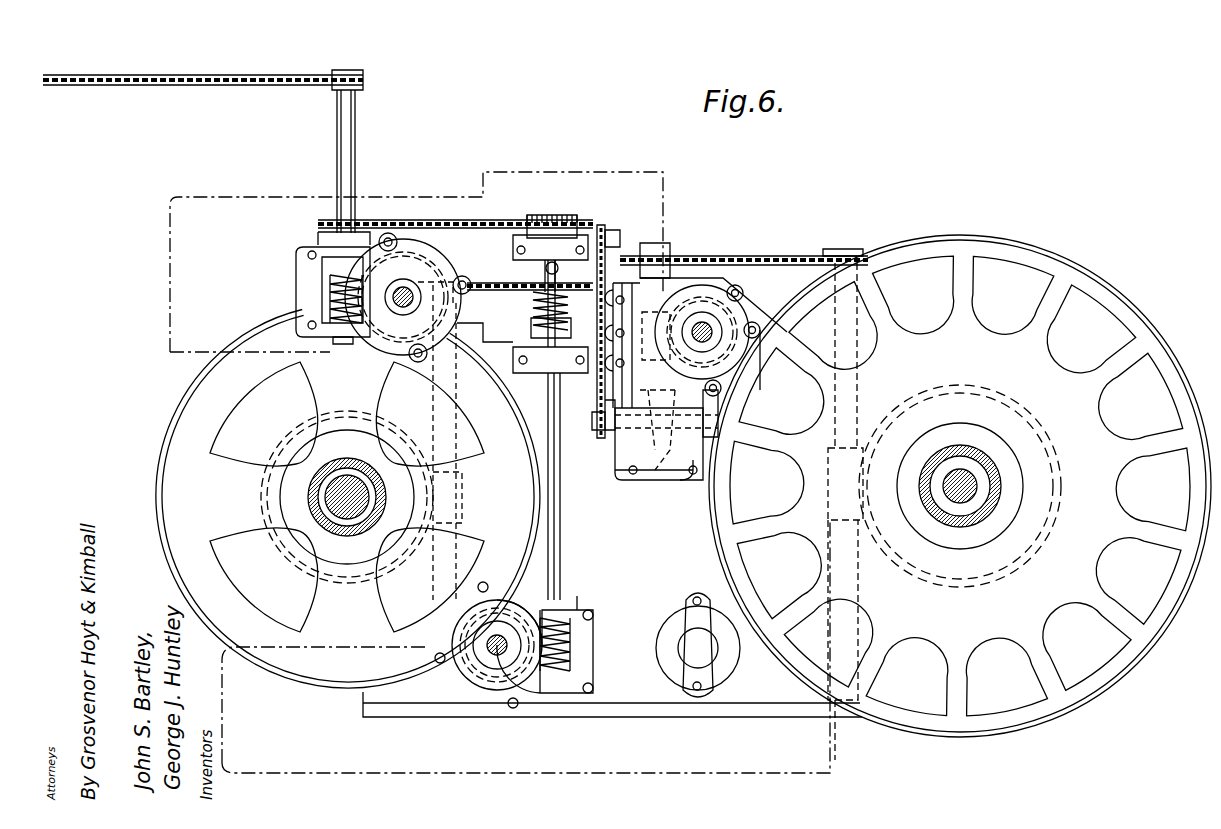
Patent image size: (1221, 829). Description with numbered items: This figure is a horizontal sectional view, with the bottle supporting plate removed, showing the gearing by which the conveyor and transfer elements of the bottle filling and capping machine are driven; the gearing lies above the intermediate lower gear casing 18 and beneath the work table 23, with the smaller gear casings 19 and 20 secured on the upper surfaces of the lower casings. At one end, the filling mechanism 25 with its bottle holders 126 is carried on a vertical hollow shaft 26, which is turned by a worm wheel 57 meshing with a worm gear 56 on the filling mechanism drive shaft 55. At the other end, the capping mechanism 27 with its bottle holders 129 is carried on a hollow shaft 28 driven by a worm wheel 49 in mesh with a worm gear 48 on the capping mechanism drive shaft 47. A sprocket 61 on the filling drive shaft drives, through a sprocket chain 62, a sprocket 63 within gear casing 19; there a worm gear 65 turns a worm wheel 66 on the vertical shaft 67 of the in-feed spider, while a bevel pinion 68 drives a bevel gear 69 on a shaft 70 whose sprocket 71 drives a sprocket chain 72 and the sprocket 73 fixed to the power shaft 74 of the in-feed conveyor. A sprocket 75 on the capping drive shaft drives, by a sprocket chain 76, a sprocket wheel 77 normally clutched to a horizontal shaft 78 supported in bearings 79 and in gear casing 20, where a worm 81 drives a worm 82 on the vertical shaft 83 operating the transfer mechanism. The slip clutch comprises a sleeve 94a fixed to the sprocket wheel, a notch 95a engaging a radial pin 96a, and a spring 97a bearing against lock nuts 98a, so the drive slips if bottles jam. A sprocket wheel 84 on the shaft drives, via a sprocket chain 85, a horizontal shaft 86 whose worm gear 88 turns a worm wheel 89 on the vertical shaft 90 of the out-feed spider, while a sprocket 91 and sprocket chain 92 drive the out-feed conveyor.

The lower gear casing 18 is at (691, 634).
The gear casing 19 is at (690, 481).
The gear casing 20 is at (580, 610).
The work table 23 is at (680, 770).
The filling mechanism 25 is at (1153, 343).
The vertical hollow shaft 26 is at (978, 462).
The capping mechanism 27 is at (306, 272).
The hollow shaft 28 is at (310, 494).
The capping mechanism drive shaft 47 is at (437, 556).
The worm gear 48 is at (454, 441).
The worm wheel 49 is at (355, 575).
The filling mechanism drive shaft 55 is at (858, 398).
The worm gear 56 is at (827, 506).
The worm wheel 57 is at (1008, 398).
The sprocket 61 is at (845, 250).
The sprocket chain 62 is at (770, 256).
The sprocket 63 is at (660, 278).
The worm gear 65 is at (645, 340).
The worm wheel 66 is at (698, 352).
The vertical shaft 67 is at (710, 328).
The bevel pinion 68 is at (656, 428).
The bevel gear 69 is at (676, 470).
The shaft 70 is at (627, 448).
The sprocket 71 is at (600, 432).
The sprocket chain 72 is at (598, 390).
The sprocket 73 is at (608, 232).
The power shaft 74 is at (622, 238).
The sprocket 75 is at (446, 268).
The sprocket chain 76 is at (490, 291).
The sprocket wheel 77 is at (545, 290).
The horizontal shaft 78 is at (562, 552).
The bearings 79 is at (572, 240).
The worm 81 is at (572, 647).
The worm 82 is at (490, 677).
The vertical shaft 83 is at (490, 652).
The sprocket wheel 84 is at (572, 215).
The sprocket chain 85 is at (428, 218).
The horizontal shaft 86 is at (356, 181).
The worm gear 88 is at (328, 298).
The worm wheel 89 is at (385, 318).
The vertical shaft 90 is at (403, 308).
The sprocket 91 is at (350, 72).
The sprocket chain 92 is at (228, 74).
The sleeve 94a is at (640, 272).
The notch 95a is at (545, 270).
The pin 96a is at (560, 264).
The spring 97a is at (566, 311).
The lock nuts 98a is at (538, 328).
The bottle holders 126 is at (1098, 322).
The bottle holders 129 is at (264, 580).